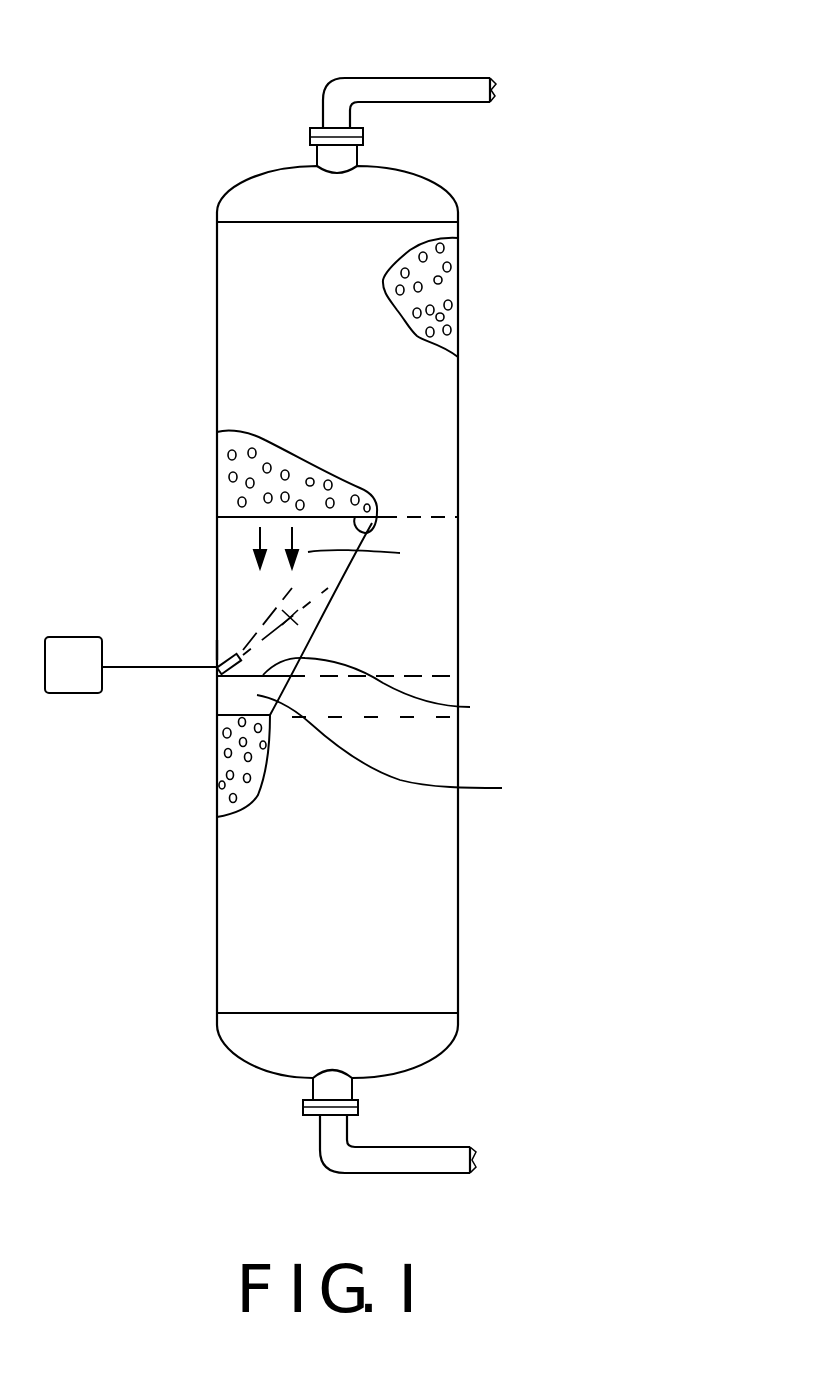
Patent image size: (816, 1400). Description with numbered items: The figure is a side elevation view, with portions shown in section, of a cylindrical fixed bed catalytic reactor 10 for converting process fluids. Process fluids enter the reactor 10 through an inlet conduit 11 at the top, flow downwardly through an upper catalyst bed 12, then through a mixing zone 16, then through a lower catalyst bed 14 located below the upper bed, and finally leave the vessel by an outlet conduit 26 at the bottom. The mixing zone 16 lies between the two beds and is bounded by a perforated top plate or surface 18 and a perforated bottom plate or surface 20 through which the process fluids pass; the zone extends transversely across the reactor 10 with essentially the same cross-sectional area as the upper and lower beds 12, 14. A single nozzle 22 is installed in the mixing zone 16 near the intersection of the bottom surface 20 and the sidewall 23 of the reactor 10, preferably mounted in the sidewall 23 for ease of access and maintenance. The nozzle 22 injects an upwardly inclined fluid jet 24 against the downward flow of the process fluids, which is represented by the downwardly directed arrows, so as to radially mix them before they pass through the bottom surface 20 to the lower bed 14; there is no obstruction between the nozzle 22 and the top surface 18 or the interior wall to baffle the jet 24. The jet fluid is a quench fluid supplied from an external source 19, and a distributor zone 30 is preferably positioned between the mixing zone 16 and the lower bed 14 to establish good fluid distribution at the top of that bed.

The fixed bed catalytic reactor 10 is at (472, 598).
The inlet conduit 11 is at (447, 78).
The upper catalyst bed 12 is at (297, 480).
The lower catalyst bed 14 is at (237, 760).
The mixing zone 16 is at (400, 553).
The perforated top plate 18 is at (366, 522).
The external source 19 is at (88, 683).
The perforated bottom plate 20 is at (470, 707).
The nozzle 22 is at (230, 677).
The sidewall 23 is at (217, 647).
The fluid jet 24 is at (243, 655).
The outlet conduit 26 is at (400, 1145).
The distributor zone 30 is at (399, 749).